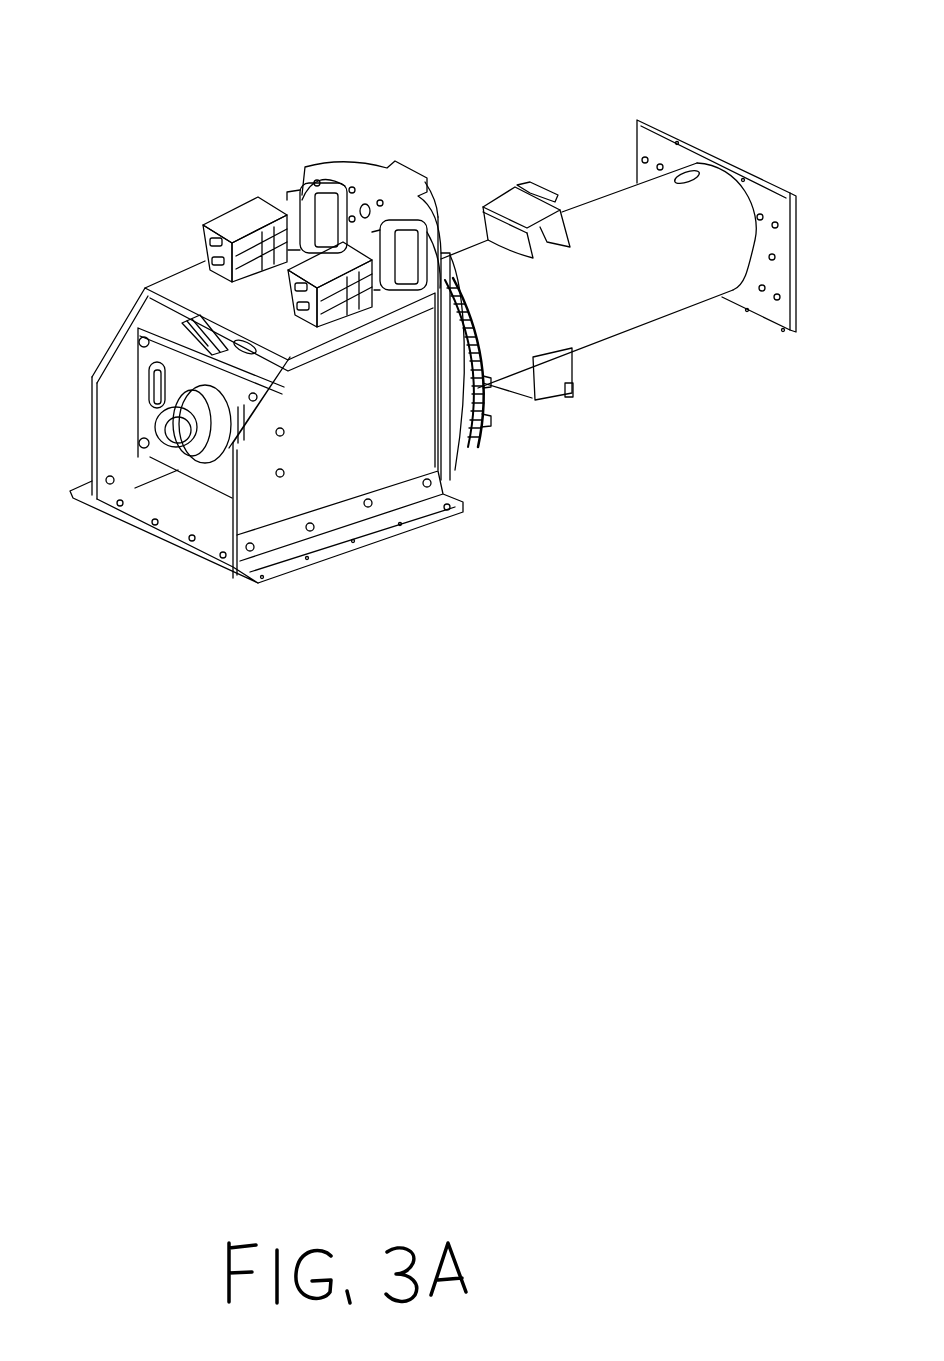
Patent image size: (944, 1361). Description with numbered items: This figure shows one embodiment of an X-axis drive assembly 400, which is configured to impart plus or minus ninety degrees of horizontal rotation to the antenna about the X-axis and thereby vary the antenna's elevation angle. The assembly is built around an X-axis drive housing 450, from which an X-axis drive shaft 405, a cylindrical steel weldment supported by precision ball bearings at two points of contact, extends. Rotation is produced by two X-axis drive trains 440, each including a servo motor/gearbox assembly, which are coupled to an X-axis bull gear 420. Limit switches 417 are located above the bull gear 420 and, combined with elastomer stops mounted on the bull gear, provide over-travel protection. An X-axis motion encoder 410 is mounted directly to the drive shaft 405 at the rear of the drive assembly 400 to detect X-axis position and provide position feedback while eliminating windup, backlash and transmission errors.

The X-axis drive assembly 400 is at (517, 740).
The X-axis drive shaft 405 is at (635, 302).
The X-axis motion encoder 410 is at (167, 440).
The limit switches 417 is at (521, 184).
The X-axis bull gear 420 is at (479, 443).
The X-axis drive trains 440 is at (302, 173).
The X-axis drive housing 450 is at (352, 456).